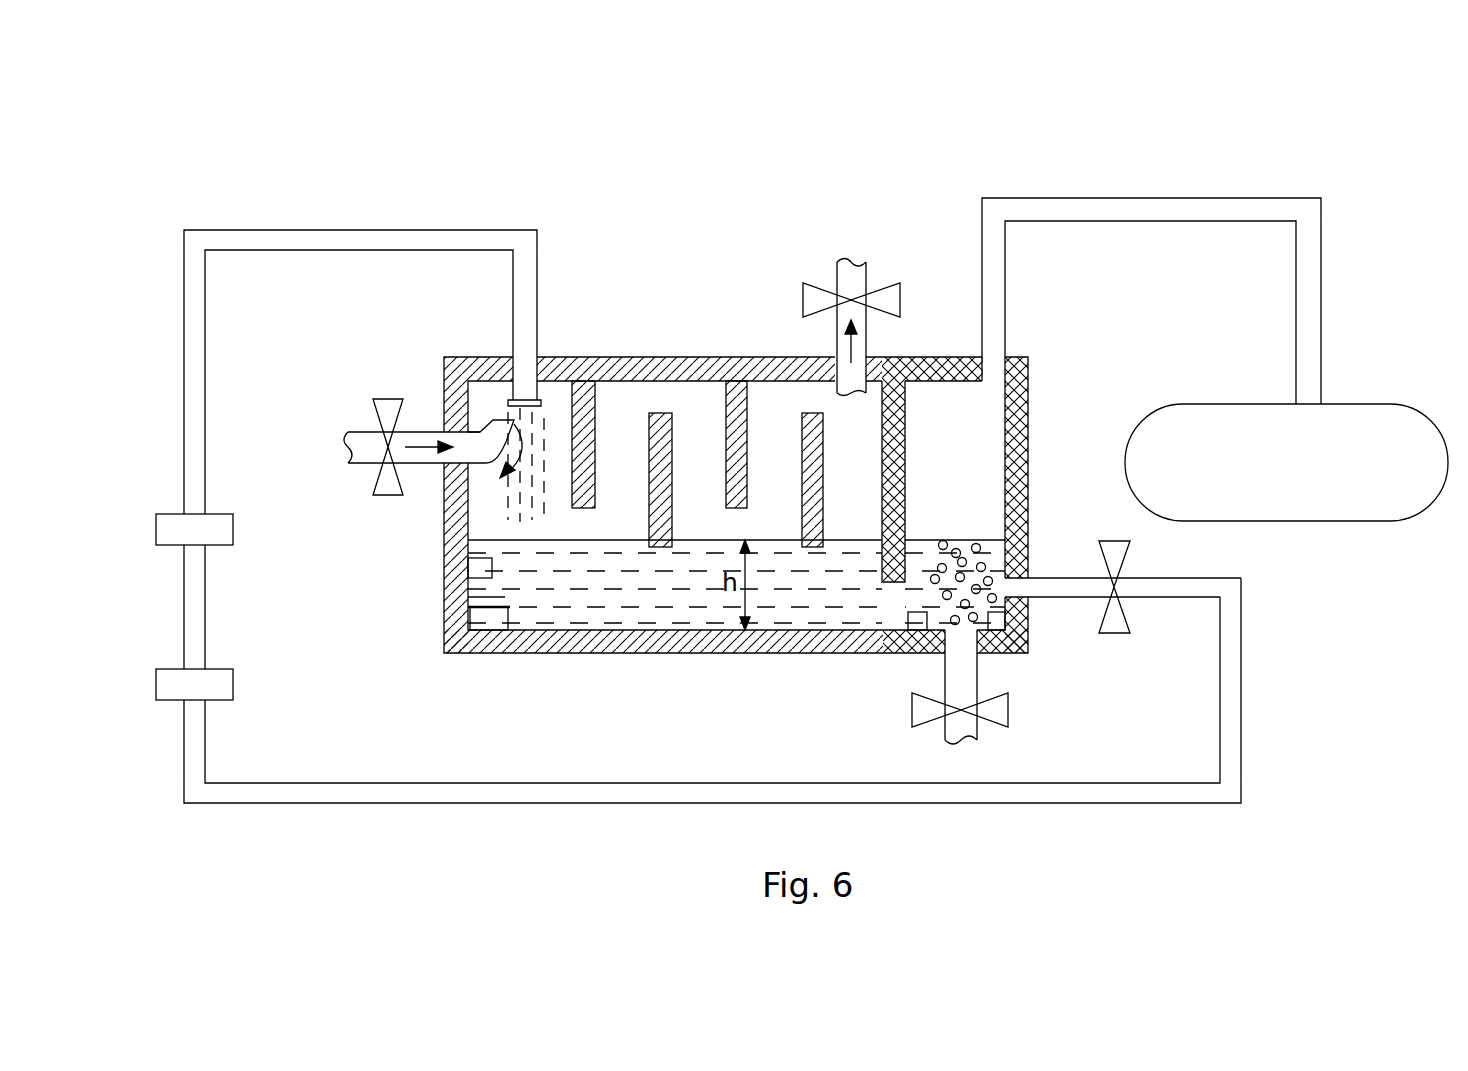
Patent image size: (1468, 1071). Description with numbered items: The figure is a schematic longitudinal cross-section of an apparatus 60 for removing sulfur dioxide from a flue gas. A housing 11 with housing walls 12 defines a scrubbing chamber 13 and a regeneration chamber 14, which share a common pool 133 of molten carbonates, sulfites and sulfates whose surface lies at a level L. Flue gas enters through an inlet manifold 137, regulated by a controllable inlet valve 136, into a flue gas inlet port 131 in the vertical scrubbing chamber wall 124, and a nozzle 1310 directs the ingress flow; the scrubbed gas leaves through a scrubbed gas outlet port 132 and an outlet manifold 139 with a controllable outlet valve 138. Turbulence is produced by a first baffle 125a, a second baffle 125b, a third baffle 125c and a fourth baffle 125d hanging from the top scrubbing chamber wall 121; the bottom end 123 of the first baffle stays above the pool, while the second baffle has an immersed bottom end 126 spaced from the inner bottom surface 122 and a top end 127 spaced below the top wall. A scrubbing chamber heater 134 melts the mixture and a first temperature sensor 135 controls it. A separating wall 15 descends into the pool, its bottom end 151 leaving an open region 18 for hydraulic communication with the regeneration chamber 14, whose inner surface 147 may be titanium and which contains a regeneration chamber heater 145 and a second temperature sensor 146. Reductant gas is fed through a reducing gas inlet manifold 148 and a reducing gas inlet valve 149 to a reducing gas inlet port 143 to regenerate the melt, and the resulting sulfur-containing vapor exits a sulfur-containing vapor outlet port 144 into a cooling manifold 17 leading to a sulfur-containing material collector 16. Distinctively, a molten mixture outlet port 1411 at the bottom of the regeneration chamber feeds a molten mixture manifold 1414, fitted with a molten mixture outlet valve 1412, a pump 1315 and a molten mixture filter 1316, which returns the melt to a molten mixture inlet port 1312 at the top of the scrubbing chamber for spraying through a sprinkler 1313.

The apparatus for removing sulfur dioxide from a flue gas 60 is at (920, 155).
The housing 11 is at (706, 653).
The housing walls 12 is at (568, 381).
The top scrubbing chamber wall 121 is at (932, 395).
The inner bottom surface of the scrubbing chamber wall 122 is at (607, 622).
The bottom end of the first baffle 123 is at (593, 560).
The vertical scrubbing chamber wall 124 is at (482, 515).
The first baffle 125a is at (562, 381).
The second baffle 125b is at (645, 477).
The third baffle 125c is at (727, 430).
The fourth baffle 125d is at (802, 467).
The bottom end of the second baffle 126 is at (672, 553).
The top end of the second baffle 127 is at (688, 381).
The scrubbing chamber 13 is at (497, 388).
The flue gas inlet port 131 is at (493, 418).
The nozzle 1310 is at (500, 405).
The molten mixture inlet port 1312 is at (540, 400).
The sprinkler 1313 is at (500, 357).
The scrubbed gas outlet port 132 is at (836, 357).
The pool 133 is at (468, 600).
The scrubbing chamber heater 134 is at (482, 612).
The first temperature sensor 135 is at (470, 568).
The controllable inlet valve 136 is at (385, 413).
The inlet manifold 137 is at (347, 448).
The controllable outlet valve 138 is at (883, 297).
The outlet manifold 139 is at (851, 260).
The regeneration chamber 14 is at (987, 417).
The reducing gas inlet port 143 is at (960, 628).
The sulfur-containing vapor outlet port 144 is at (1017, 381).
The regeneration chamber heater 145 is at (993, 622).
The second temperature sensor 146 is at (905, 655).
The inner surface of the housing walls of the regeneration chamber 147 is at (990, 572).
The reducing gas inlet manifold 148 is at (960, 741).
The reducing gas inlet valve 149 is at (997, 710).
The molten mixture outlet port 1411 is at (998, 585).
The molten mixture outlet valve 1412 is at (1125, 575).
The molten mixture manifold 1414 is at (300, 792).
The pump 1315 is at (176, 690).
The molten mixture filter 1316 is at (176, 535).
The separating wall 15 is at (883, 510).
The bottom end of the separating wall 151 is at (892, 582).
The sulfur-containing material collector 16 is at (1315, 522).
The cooling manifold 17 is at (1215, 198).
The open region 18 is at (765, 640).
The level of the pool L is at (527, 545).